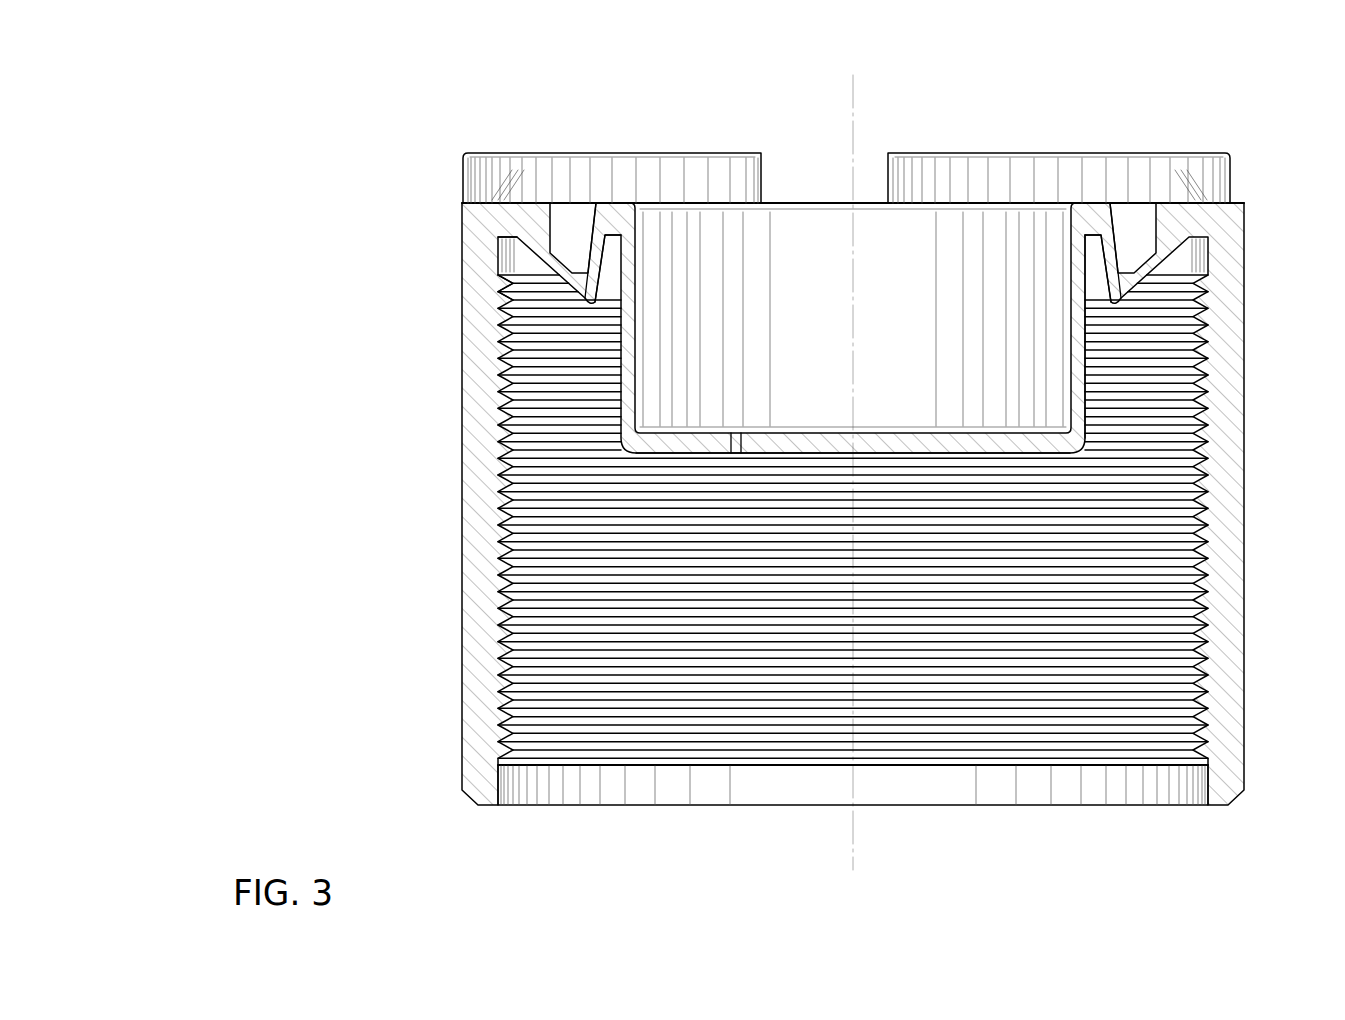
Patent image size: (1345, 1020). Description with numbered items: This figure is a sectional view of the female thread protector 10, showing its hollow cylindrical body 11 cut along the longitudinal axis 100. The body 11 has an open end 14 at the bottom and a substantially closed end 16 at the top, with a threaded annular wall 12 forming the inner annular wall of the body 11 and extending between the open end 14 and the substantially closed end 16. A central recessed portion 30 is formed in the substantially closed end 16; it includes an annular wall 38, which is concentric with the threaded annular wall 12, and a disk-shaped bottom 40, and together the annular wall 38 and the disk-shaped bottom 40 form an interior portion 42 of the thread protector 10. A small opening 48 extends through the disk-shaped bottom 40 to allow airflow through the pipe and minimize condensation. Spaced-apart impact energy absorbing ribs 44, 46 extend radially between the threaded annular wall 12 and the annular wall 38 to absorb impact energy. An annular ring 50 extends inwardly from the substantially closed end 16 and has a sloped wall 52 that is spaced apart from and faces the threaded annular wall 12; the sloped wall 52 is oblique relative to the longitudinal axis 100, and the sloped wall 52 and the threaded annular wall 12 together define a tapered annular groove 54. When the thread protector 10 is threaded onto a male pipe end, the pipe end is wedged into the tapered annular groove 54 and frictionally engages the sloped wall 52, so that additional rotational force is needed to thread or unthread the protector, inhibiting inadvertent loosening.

The female thread protector 10 is at (383, 88).
The longitudinal axis 100 is at (855, 87).
The hollow cylindrical body 11 is at (1248, 592).
The threaded annular wall 12 is at (557, 405).
The open end 14 is at (1128, 806).
The substantially closed end 16 is at (793, 202).
The central recessed portion 30 is at (955, 245).
The annular wall 38 is at (1080, 372).
The disk-shaped bottom 40 is at (1030, 440).
The interior portion 42 is at (1088, 395).
The impact energy absorbing rib 44 is at (612, 255).
The impact energy absorbing rib 46 is at (1096, 258).
The small opening 48 is at (735, 437).
The annular ring 50 is at (588, 296).
The sloped wall 52 is at (500, 278).
The tapered annular groove 54 is at (507, 252).